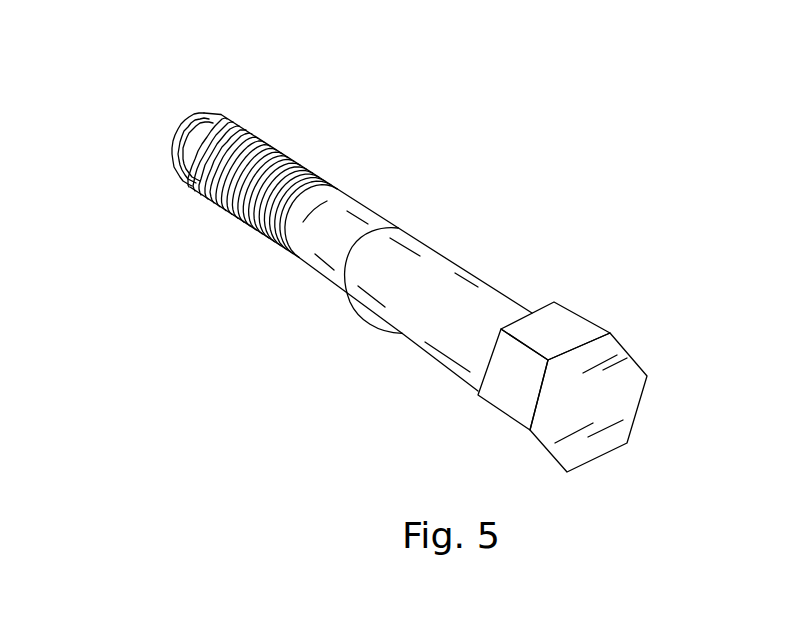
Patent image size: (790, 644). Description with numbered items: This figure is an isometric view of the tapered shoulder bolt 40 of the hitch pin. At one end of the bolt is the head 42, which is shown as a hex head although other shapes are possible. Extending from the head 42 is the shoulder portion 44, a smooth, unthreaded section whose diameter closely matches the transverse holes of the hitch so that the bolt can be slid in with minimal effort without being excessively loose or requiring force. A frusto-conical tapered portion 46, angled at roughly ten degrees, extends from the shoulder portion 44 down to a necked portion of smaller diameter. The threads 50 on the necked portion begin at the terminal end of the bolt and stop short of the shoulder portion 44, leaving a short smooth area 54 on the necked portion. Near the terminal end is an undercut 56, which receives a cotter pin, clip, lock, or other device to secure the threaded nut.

The tapered shoulder bolt 40 is at (446, 144).
The head 42 is at (556, 333).
The shoulder portion 44 is at (478, 292).
The frusto-conical tapered portion 46 is at (380, 272).
The threads 50 is at (266, 162).
The short smooth area 54 is at (333, 213).
The undercut 56 is at (196, 155).